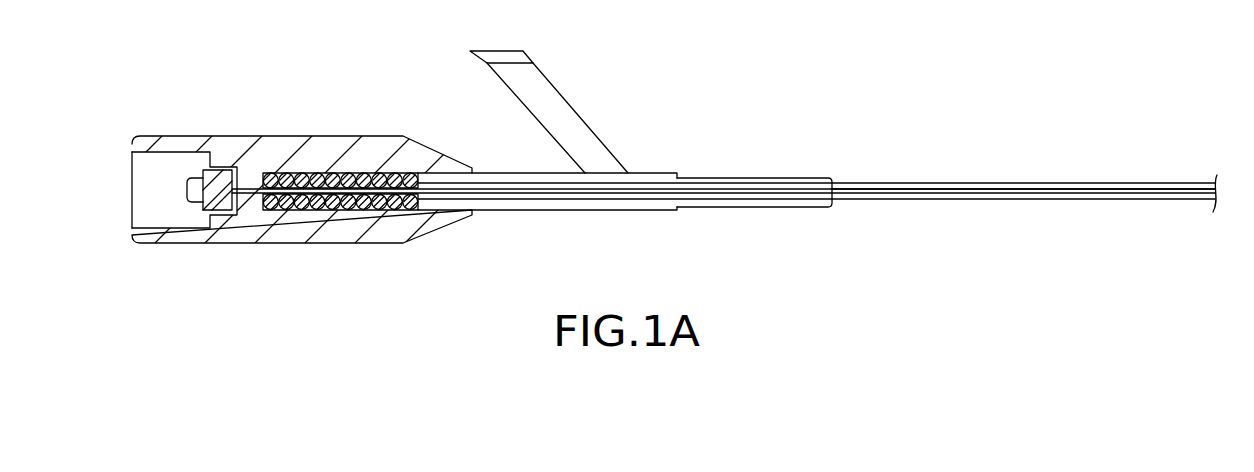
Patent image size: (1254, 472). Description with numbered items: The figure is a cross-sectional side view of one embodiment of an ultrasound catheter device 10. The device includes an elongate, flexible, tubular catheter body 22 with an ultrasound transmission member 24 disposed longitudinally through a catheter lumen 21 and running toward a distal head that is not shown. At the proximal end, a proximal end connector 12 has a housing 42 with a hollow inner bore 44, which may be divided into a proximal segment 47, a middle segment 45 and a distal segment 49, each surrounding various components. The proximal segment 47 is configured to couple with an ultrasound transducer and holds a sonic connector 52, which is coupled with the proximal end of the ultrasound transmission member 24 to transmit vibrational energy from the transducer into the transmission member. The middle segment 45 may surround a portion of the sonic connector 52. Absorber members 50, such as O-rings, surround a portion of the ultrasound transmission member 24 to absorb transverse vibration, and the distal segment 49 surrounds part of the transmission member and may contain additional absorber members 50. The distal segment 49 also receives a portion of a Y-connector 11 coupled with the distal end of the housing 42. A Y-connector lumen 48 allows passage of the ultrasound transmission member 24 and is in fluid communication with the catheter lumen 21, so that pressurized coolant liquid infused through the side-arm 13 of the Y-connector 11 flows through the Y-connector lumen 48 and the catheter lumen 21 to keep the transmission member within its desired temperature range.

The ultrasound catheter device 10 is at (845, 86).
The Y-connector 11 is at (665, 136).
The proximal end connector 12 is at (412, 114).
The side-arm 13 is at (556, 90).
The catheter lumen 21 is at (860, 200).
The catheter body 22 is at (887, 183).
The ultrasound transmission member 24 is at (898, 192).
The housing 42 is at (295, 147).
The hollow inner bore 44 is at (185, 213).
The middle segment 45 is at (243, 170).
The proximal segment 47 is at (148, 178).
The Y-connector lumen 48 is at (517, 184).
The distal segment 49 is at (370, 210).
The absorber members 50 is at (331, 210).
The sonic connector 52 is at (188, 178).